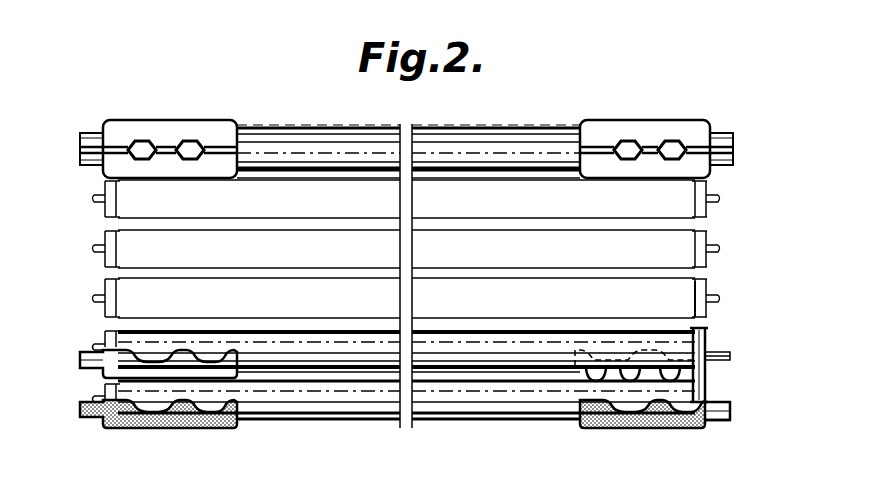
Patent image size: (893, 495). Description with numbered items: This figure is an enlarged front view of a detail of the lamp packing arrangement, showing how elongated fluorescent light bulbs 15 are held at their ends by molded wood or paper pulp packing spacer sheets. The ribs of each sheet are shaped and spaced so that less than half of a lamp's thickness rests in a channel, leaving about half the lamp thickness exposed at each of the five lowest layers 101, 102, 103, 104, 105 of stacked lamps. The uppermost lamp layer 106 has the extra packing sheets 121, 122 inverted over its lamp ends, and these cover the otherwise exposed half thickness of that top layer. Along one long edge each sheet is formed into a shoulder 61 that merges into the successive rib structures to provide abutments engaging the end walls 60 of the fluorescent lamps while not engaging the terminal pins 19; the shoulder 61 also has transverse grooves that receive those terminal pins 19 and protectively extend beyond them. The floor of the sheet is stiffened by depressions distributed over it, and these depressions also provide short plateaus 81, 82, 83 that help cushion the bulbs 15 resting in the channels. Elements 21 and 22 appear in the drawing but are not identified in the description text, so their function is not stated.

The fluorescent light bulb 15 is at (446, 186).
The uppermost lamp layer 106 is at (533, 152).
The extra packing sheet 121 is at (183, 128).
The extra packing sheet 122 is at (650, 127).
The lamp layer 105 is at (668, 210).
The lamp layer 104 is at (668, 258).
The lamp layer 103 is at (703, 283).
The lamp layer 102 is at (670, 312).
The end wall 60 is at (704, 340).
The terminal pin 19 is at (713, 351).
The shoulder 61 is at (700, 368).
The short plateau 81 is at (669, 382).
The short plateau 82 is at (648, 380).
The short plateau 83 is at (605, 380).
The pad 22 is at (673, 420).
The lamp layer 101 is at (704, 420).
The pad 21 is at (160, 420).